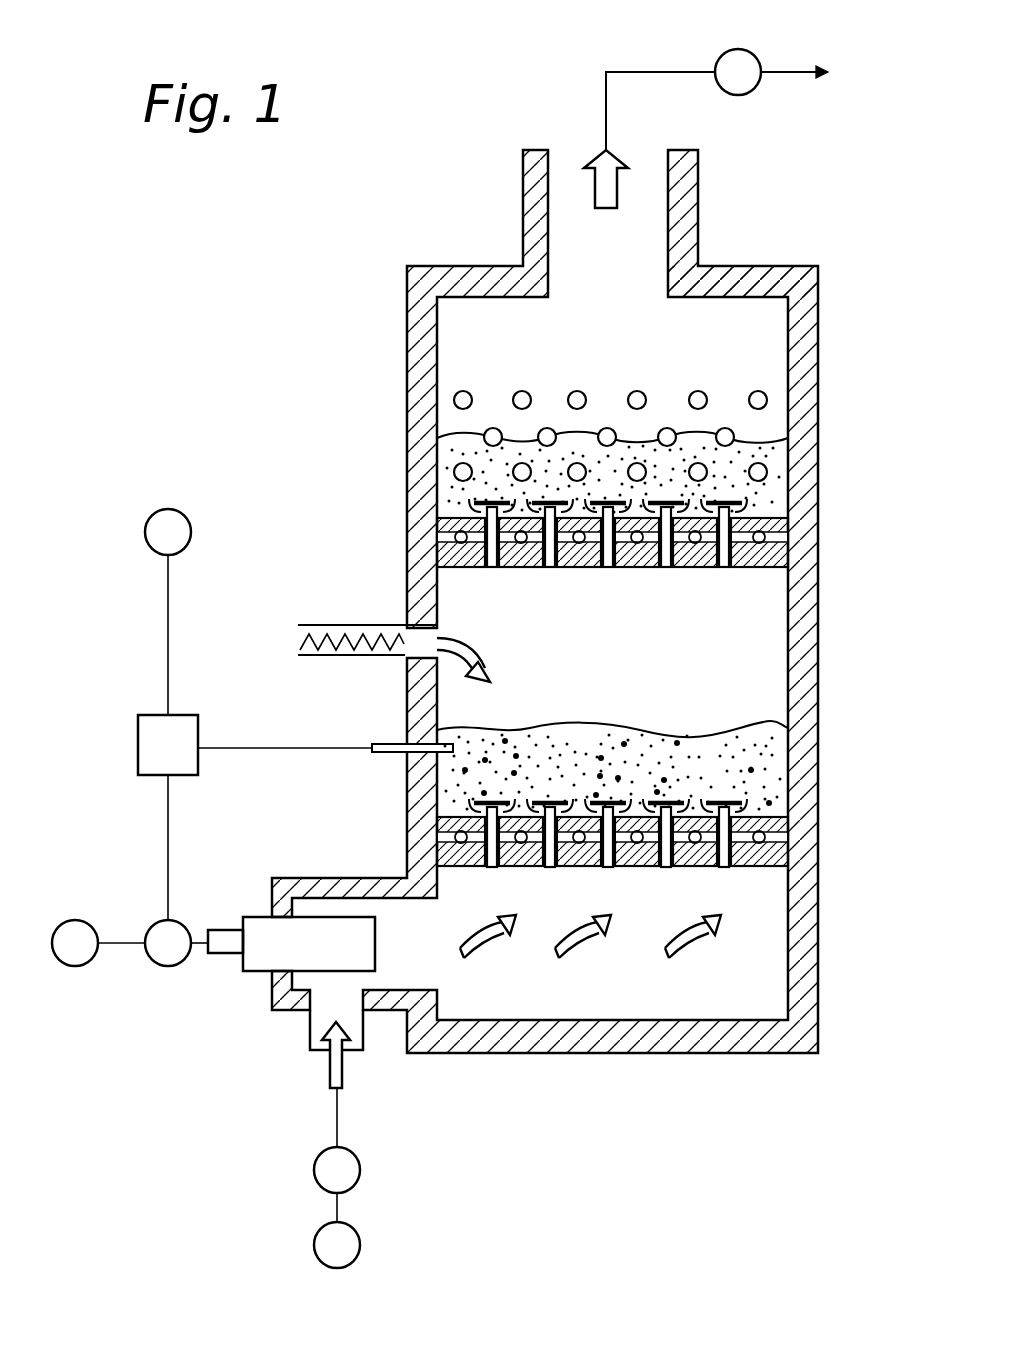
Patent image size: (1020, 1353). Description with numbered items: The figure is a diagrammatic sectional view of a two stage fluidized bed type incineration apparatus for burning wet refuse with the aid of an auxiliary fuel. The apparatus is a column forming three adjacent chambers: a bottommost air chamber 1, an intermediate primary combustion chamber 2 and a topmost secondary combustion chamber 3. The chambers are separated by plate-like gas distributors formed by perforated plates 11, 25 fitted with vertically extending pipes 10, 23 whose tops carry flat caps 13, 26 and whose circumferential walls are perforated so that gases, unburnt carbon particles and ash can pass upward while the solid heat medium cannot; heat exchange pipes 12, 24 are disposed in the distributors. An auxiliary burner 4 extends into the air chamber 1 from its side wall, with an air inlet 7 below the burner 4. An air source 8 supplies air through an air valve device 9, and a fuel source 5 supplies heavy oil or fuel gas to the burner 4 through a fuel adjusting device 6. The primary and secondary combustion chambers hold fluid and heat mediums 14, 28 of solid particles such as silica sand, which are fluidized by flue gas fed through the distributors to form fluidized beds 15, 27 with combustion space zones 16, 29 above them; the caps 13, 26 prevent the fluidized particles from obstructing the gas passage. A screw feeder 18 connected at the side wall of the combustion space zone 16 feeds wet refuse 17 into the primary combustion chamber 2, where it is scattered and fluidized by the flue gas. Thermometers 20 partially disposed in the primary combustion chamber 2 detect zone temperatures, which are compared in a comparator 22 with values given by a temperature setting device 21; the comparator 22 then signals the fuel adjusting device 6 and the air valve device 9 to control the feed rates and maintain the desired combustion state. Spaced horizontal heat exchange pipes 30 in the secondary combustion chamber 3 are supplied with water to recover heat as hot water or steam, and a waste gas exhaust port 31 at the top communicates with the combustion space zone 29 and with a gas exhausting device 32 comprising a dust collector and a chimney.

The air chamber 1 is at (768, 952).
The primary combustion chamber 2 is at (782, 643).
The secondary combustion chamber 3 is at (767, 338).
The auxiliary burner 4 is at (245, 913).
The fuel source 5 is at (98, 943).
The fuel adjusting device 6 is at (176, 943).
The air inlet 7 is at (365, 1042).
The air source 8 is at (337, 1230).
The air valve device 9 is at (337, 1140).
The pipes 10 is at (733, 869).
The perforated plate 11 is at (643, 869).
The heat exchange pipes 12 is at (703, 869).
The flat caps 13 is at (492, 794).
The fluid and heat medium 14 is at (775, 795).
The fluidized bed 15 is at (730, 727).
The combustion space zone 16 is at (753, 625).
The wet refuse 17 is at (770, 765).
The screw feeder 18 is at (320, 659).
The thermometers 20 is at (388, 742).
The temperature setting device 21 is at (168, 714).
The comparator 22 is at (168, 745).
The pipes 23 is at (728, 569).
The heat exchange pipes 24 is at (642, 569).
The perforated plate 25 is at (582, 569).
The flat caps 26 is at (487, 500).
The fluidized bed 27 is at (780, 433).
The fluid and heat medium 28 is at (780, 483).
The combustion space zone 29 is at (818, 279).
The heat exchange pipes 30 is at (768, 397).
The waste gas exhaust port 31 is at (698, 160).
The gas exhausting device 32 is at (717, 99).